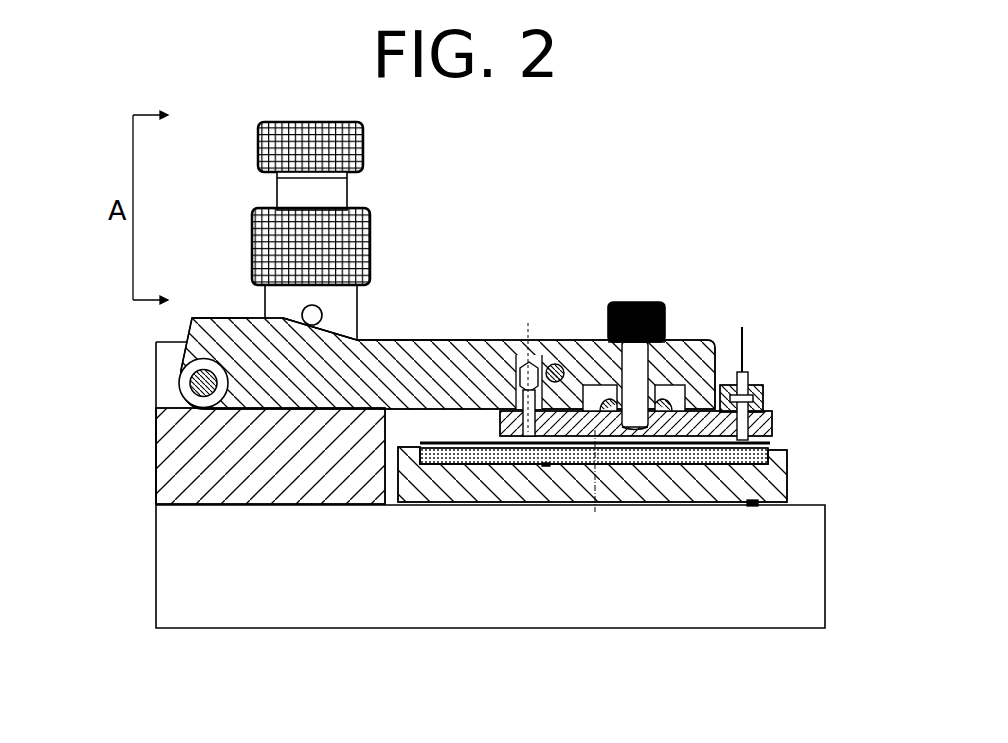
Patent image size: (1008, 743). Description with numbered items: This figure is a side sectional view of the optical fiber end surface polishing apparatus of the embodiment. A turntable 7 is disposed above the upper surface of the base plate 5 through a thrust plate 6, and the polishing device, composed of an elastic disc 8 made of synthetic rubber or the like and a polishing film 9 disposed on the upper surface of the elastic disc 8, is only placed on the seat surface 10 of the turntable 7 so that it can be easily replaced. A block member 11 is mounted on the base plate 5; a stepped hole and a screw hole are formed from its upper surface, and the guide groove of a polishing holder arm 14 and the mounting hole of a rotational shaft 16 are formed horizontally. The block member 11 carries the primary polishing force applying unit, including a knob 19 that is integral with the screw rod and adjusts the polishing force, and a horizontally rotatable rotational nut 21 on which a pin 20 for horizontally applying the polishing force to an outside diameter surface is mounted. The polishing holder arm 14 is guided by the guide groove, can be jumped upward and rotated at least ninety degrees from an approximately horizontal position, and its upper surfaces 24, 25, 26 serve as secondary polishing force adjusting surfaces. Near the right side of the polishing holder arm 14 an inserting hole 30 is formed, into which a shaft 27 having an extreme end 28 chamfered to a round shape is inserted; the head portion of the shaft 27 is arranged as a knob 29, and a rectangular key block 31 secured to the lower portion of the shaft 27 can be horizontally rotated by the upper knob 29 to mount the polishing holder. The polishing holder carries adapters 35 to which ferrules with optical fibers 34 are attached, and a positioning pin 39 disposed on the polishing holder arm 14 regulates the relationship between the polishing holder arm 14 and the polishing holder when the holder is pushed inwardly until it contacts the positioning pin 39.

The base plate 5 is at (800, 597).
The thrust plate 6 is at (755, 508).
The turntable 7 is at (770, 488).
The elastic disc 8 is at (775, 462).
The polishing film 9 is at (767, 445).
The seat surface 10 is at (545, 466).
The block member 11 is at (168, 465).
The polishing holder arm 14 is at (487, 352).
The rotational shaft 16 is at (192, 378).
The knob 19 is at (363, 133).
The pin 20 is at (303, 312).
The rotational nut 21 is at (367, 213).
The upper surface 24 is at (392, 340).
The upper surface 25 is at (330, 322).
The upper surface 26 is at (207, 317).
The shaft 27 is at (663, 302).
The extreme end 28 is at (637, 428).
The knob 29 is at (613, 302).
The inserting hole 30 is at (650, 350).
The key block 31 is at (608, 360).
The ferrules with optical fibers 34 is at (748, 372).
The adapters 35 is at (765, 392).
The positioning pin 39 is at (528, 323).